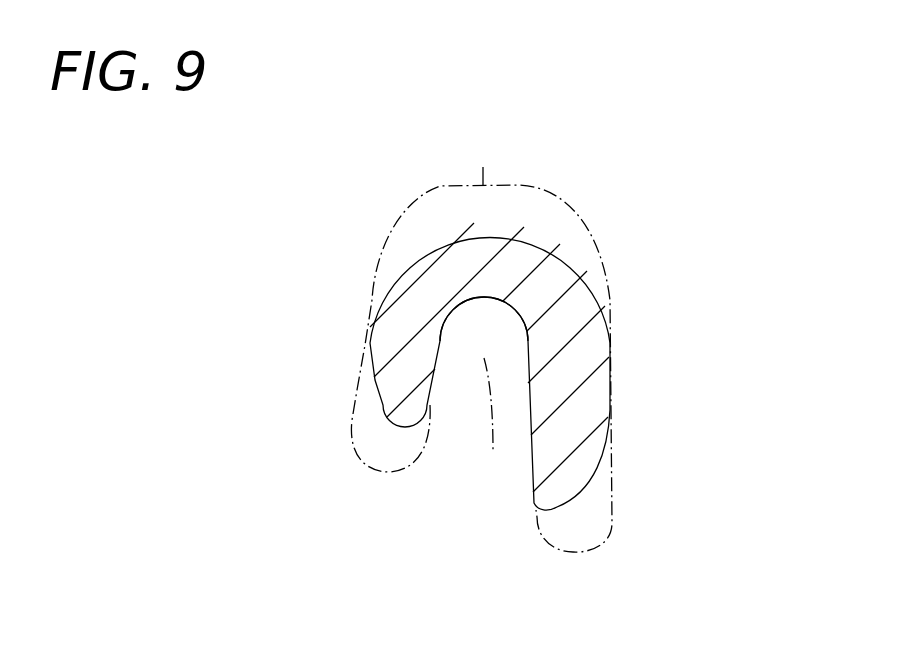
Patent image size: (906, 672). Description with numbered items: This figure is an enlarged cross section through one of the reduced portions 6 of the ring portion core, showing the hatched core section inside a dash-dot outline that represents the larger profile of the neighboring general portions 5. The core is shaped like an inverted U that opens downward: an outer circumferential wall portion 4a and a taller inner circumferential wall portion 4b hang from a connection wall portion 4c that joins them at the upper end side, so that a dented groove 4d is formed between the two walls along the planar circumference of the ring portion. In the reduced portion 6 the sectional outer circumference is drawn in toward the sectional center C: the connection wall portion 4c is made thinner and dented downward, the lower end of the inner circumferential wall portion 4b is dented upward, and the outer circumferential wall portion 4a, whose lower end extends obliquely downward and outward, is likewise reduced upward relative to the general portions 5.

The reduced portion 6 is at (633, 302).
The general portion 5 is at (483, 167).
The outer circumferential wall portion 4a is at (403, 383).
The inner circumferential wall portion 4b is at (573, 415).
The connection wall portion 4c is at (503, 270).
The dented groove 4d is at (440, 362).
The sectional center C is at (492, 423).